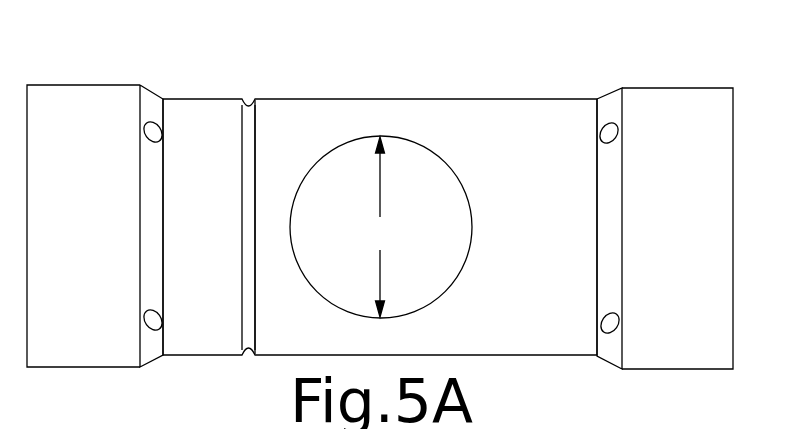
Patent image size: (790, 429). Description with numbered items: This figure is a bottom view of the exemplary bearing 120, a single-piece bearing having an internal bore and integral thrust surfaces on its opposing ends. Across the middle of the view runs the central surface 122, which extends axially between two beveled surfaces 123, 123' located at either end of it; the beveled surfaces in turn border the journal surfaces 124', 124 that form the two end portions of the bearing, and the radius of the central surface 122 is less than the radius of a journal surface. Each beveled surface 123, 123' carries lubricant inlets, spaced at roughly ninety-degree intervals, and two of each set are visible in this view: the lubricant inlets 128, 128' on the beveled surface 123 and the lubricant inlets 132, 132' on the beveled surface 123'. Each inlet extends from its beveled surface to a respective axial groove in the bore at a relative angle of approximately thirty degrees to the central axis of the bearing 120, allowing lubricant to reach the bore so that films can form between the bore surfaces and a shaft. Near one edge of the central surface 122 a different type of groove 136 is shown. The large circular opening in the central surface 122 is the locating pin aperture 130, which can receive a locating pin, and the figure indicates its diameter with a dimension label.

The bearing 120 is at (242, 43).
The central surface 122 is at (383, 98).
The beveled surface 123 is at (195, 215).
The beveled surface 123' is at (571, 216).
The journal surface 124 is at (661, 206).
The journal surface 124' is at (83, 205).
The lubricant inlet 128 is at (116, 122).
The lubricant inlet 128' is at (118, 325).
The locating pin aperture 130 is at (448, 288).
The lubricant inlet 132 is at (650, 122).
The lubricant inlet 132' is at (654, 334).
The groove 136 is at (257, 157).